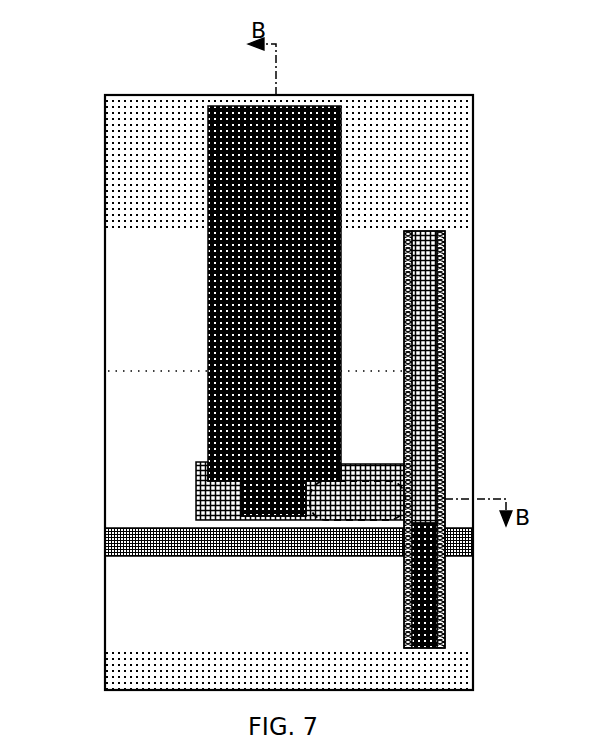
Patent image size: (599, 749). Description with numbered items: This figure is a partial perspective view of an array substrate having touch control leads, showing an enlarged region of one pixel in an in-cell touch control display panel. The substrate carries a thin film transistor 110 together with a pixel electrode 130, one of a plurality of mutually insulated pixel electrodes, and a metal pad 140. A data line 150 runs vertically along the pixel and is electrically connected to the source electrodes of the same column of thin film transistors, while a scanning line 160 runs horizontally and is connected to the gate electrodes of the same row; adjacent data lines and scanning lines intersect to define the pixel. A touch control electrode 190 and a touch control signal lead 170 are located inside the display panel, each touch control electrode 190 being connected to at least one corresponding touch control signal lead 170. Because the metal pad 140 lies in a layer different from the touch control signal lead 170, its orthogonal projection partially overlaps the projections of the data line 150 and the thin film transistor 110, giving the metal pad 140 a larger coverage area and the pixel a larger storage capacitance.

The thin film transistor 110 is at (340, 514).
The pixel electrode 130 is at (318, 88).
The metal pad 140 is at (209, 500).
The data line 150 is at (422, 200).
The scanning line 160 is at (115, 530).
The touch control signal lead 170 is at (435, 160).
The touch control electrode 190 is at (124, 303).